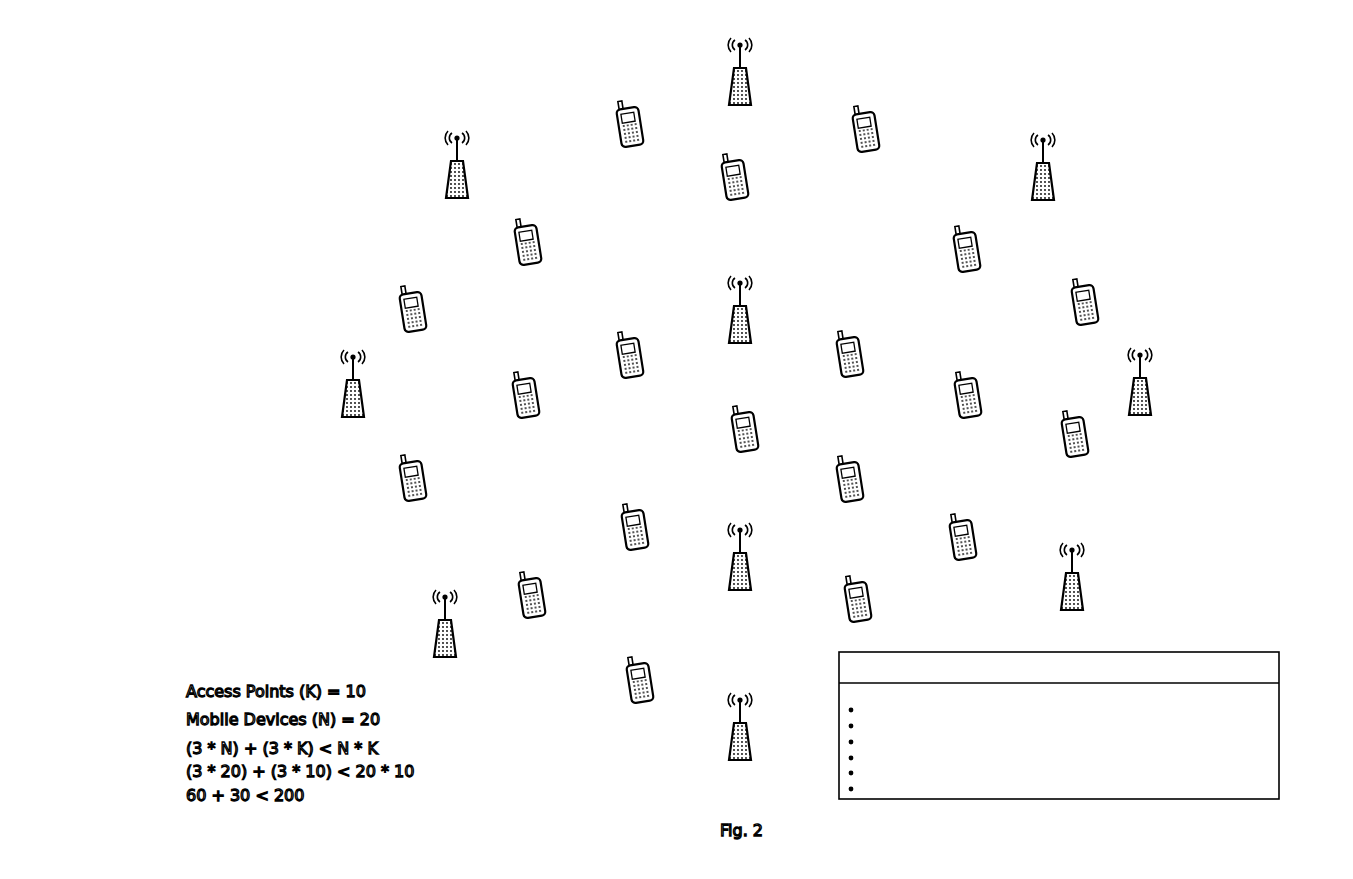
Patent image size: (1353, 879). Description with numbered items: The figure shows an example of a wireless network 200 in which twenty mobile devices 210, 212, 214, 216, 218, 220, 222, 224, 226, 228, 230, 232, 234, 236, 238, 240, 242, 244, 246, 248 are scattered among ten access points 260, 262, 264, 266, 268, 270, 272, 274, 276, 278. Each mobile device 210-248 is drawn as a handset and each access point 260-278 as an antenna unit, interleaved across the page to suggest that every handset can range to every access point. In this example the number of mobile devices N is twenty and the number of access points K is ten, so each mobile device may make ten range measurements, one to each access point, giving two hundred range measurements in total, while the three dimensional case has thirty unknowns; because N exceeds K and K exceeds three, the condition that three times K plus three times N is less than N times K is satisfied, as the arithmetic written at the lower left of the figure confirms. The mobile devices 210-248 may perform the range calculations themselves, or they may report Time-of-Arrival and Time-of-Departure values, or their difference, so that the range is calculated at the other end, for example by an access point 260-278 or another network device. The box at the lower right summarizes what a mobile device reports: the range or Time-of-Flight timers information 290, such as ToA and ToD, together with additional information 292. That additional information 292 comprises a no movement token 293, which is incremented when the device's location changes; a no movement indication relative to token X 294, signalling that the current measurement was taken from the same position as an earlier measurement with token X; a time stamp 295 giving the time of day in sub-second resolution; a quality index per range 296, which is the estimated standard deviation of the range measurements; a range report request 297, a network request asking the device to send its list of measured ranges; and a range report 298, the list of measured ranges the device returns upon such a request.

The network 200 is at (287, 126).
The mobile device 210 is at (408, 289).
The mobile device 212 is at (408, 459).
The mobile device 214 is at (522, 223).
The mobile device 216 is at (520, 377).
The mobile device 218 is at (526, 577).
The mobile device 220 is at (626, 106).
The mobile device 222 is at (625, 337).
The mobile device 224 is at (629, 509).
The mobile device 226 is at (634, 662).
The mobile device 228 is at (729, 159).
The mobile device 230 is at (739, 411).
The mobile device 232 is at (860, 111).
The mobile device 234 is at (845, 336).
The mobile device 236 is at (843, 461).
The mobile device 238 is at (851, 581).
The mobile device 240 is at (961, 232).
The mobile device 242 is at (962, 377).
The mobile device 244 is at (957, 519).
The mobile device 246 is at (1079, 284).
The mobile device 248 is at (1069, 416).
The access point 260 is at (343, 409).
The access point 262 is at (448, 189).
The access point 264 is at (436, 649).
The access point 266 is at (730, 101).
The access point 268 is at (751, 333).
The access point 270 is at (752, 566).
The access point 272 is at (751, 749).
The access point 274 is at (1053, 181).
The access point 276 is at (1083, 591).
The access point 278 is at (1151, 401).
The range or Time-of-Flight timers information 290 is at (1104, 668).
The additional information 292 is at (841, 691).
The no movement token 293 is at (1068, 708).
The no movement indication relative to token X 294 is at (1190, 731).
The time stamp 295 is at (903, 740).
The quality index per range 296 is at (1106, 757).
The range report request 297 is at (903, 772).
The range report 298 is at (1012, 790).